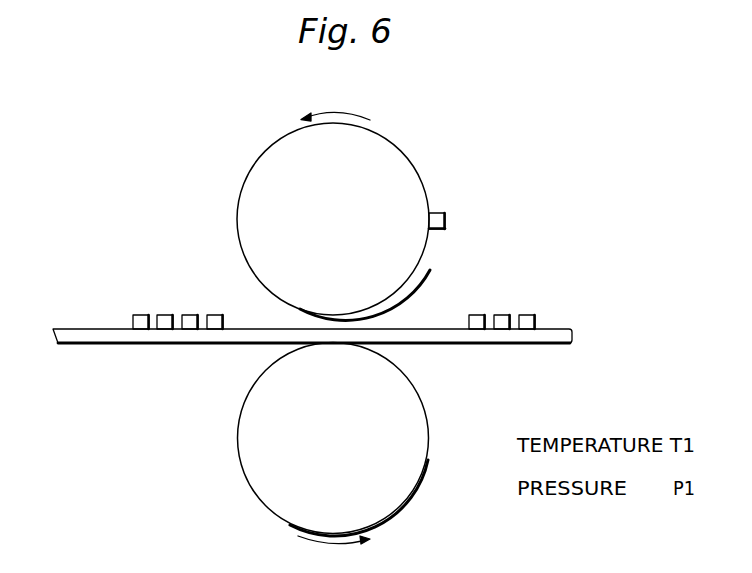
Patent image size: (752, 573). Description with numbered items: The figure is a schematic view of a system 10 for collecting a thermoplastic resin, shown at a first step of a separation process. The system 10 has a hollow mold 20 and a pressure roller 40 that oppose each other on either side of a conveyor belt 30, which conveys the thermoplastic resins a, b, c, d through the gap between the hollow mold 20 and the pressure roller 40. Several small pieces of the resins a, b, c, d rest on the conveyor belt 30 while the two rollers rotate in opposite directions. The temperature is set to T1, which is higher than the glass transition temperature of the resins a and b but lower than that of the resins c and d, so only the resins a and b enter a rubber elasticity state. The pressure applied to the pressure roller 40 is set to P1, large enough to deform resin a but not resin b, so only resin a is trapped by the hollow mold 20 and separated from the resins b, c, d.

The system 10 is at (193, 114).
The hollow mold 20 is at (387, 163).
The conveyor belt 30 is at (52, 337).
The pressure roller 40 is at (408, 450).
The thermoplastic resin a is at (447, 218).
The thermoplastic resin b is at (190, 313).
The thermoplastic resin c is at (165, 313).
The thermoplastic resin d is at (141, 313).